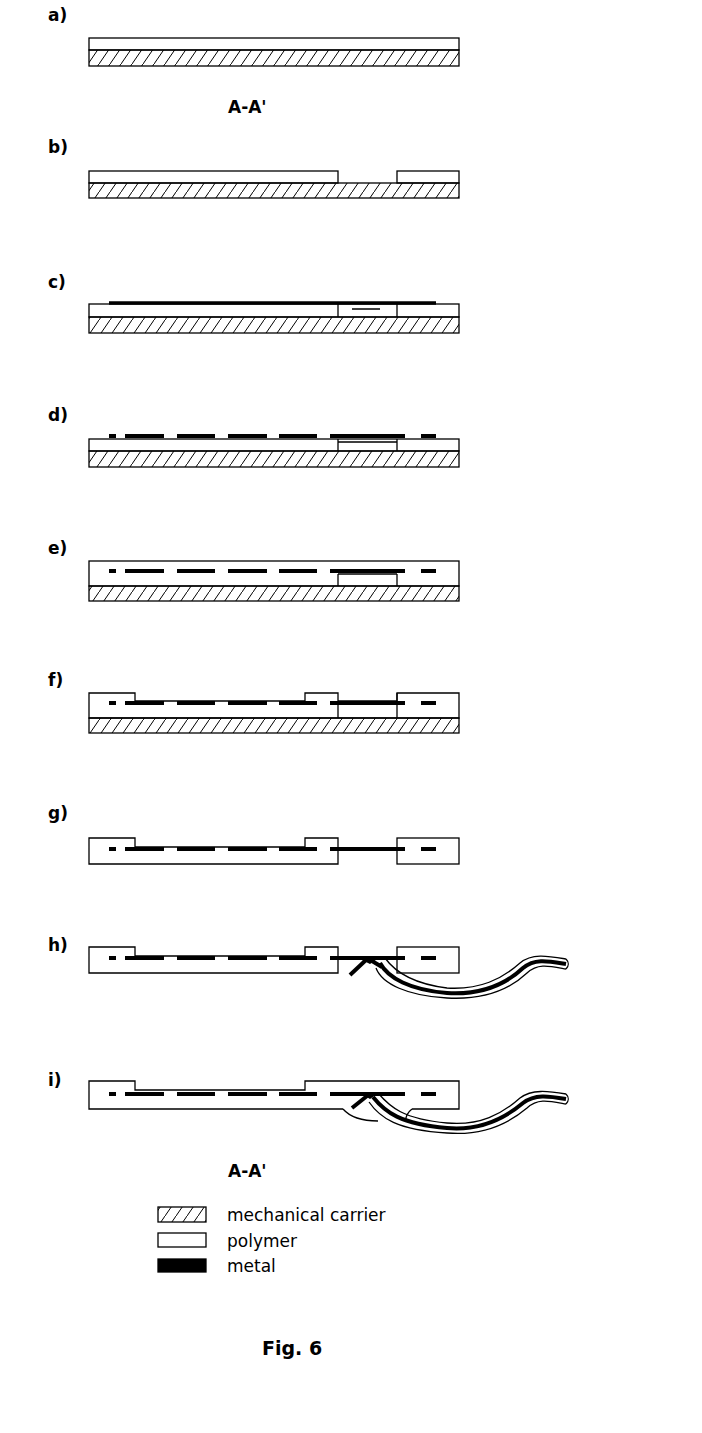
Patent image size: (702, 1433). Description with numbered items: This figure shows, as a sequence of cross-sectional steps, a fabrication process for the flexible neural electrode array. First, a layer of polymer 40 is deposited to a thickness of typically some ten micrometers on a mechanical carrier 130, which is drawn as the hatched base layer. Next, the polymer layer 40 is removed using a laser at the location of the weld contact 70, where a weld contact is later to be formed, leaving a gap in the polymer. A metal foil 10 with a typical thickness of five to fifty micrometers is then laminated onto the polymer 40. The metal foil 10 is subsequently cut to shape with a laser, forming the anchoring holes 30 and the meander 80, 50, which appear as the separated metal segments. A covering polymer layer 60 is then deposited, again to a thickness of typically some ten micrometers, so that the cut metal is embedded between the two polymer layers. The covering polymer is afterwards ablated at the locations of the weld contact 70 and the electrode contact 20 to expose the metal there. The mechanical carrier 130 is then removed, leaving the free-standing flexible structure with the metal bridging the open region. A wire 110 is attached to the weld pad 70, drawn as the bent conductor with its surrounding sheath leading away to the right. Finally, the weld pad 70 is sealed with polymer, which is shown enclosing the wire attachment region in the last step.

The polymer layer 40 is at (443, 43).
The mechanical carrier 130 is at (457, 58).
The metal foil 10 is at (428, 302).
The anchoring holes 30 is at (121, 433).
The meander 50 is at (173, 433).
The meander 80 is at (249, 433).
The covering polymer layer 60 is at (450, 560).
The electrode contact 20 is at (195, 703).
The weld contact 70 is at (370, 703).
The wire 110 is at (521, 966).